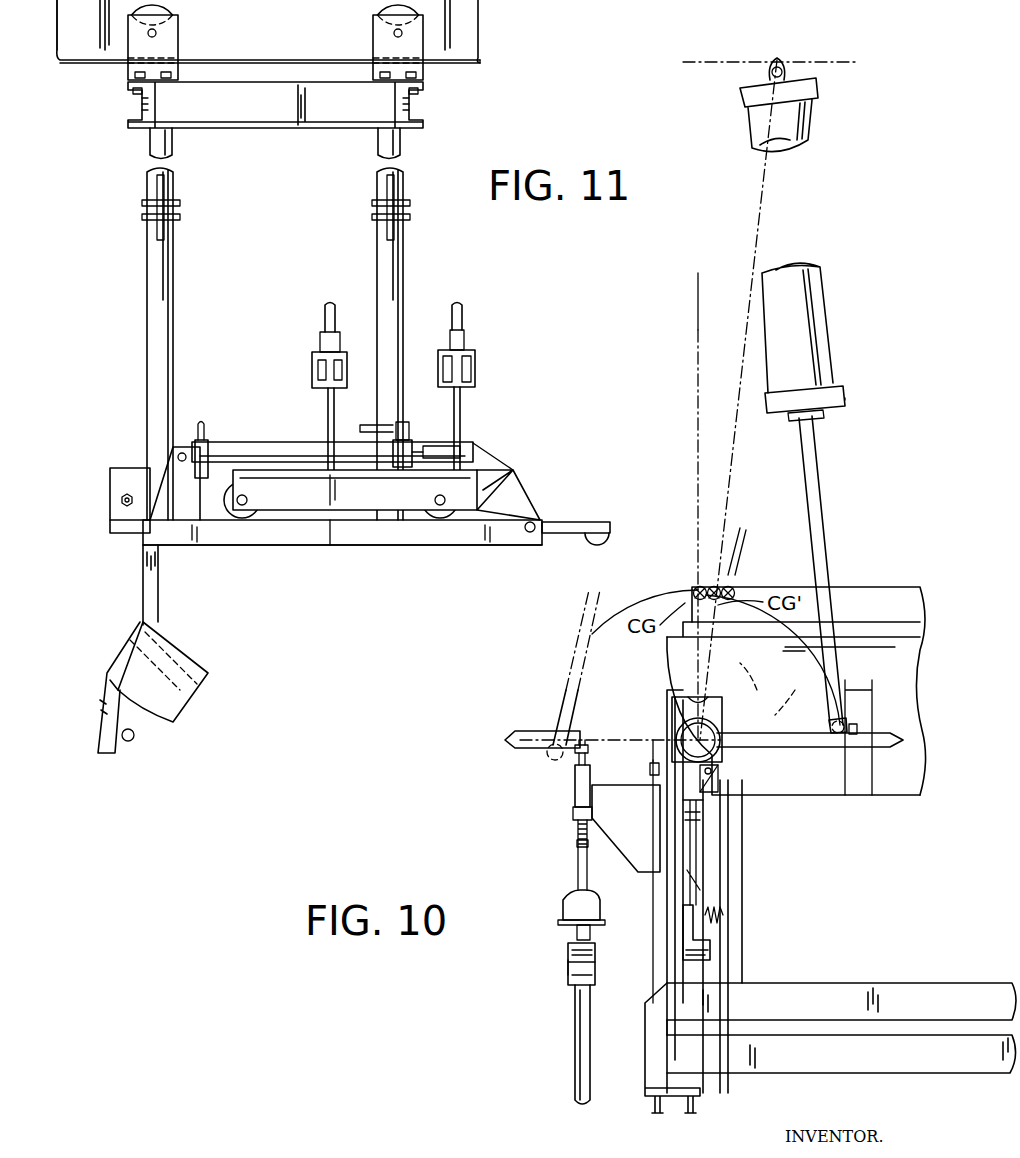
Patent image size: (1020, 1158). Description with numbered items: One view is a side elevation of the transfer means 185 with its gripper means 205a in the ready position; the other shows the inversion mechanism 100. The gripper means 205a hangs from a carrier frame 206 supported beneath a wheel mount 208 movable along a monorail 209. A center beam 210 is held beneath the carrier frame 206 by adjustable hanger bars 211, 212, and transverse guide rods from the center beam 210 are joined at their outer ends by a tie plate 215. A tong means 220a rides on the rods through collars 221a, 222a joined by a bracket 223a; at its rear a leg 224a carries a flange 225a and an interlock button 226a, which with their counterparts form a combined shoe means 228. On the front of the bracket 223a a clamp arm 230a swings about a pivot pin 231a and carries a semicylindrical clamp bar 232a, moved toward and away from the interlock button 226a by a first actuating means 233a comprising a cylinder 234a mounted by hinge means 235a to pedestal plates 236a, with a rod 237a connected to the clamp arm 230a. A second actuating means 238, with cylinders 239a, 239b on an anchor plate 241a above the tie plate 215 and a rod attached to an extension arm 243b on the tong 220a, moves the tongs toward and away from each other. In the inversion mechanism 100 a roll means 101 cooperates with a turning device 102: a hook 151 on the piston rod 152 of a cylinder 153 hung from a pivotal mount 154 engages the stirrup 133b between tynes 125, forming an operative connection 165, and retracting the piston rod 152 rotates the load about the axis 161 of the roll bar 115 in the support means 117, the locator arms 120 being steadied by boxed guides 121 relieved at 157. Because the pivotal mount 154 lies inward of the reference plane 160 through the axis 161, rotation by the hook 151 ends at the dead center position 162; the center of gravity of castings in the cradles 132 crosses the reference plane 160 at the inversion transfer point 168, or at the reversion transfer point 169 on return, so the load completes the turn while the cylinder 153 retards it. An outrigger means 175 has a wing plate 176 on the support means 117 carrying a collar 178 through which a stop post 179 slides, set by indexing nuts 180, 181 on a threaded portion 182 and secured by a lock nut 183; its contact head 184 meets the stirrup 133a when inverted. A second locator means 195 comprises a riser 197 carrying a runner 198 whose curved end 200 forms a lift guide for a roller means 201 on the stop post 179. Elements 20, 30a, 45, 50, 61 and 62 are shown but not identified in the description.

In FIG. 11, the monorail 209 is at (480, 2).
In FIG. 11, the transfer means 185 is at (503, 56).
In FIG. 11, the wheel mount 208 is at (362, 34).
In FIG. 11, the carrier frame 206 is at (376, 104).
In FIG. 11, the hanger bar 211 is at (172, 278).
In FIG. 11, the hanger bar 212 is at (393, 272).
In FIG. 11, the cylinder 239b is at (313, 355).
In FIG. 11, the extension arm 243b is at (327, 402).
In FIG. 11, the second actuating means 238 is at (479, 344).
In FIG. 11, the cylinder 239a is at (478, 355).
In FIG. 11, the anchor plate 241a is at (463, 397).
In FIG. 11, the first actuating means 233a is at (262, 442).
In FIG. 11, the extensible and retractable rod 237a is at (418, 448).
In FIG. 11, the hinge means 235a is at (178, 455).
In FIG. 11, the center beam 210 is at (112, 483).
In FIG. 11, the pedestal plates 236a is at (150, 507).
In FIG. 11, the gripper means 205a is at (486, 452).
In FIG. 11, the collar 221a is at (243, 518).
In FIG. 11, the collar 222a is at (438, 525).
In FIG. 11, the tie plate 215 is at (418, 502).
In FIG. 11, the cylinder 234a is at (260, 458).
In FIG. 11, the pivot pin 231a is at (534, 521).
In FIG. 11, the bracket 223a is at (298, 540).
In FIG. 11, the tong means 220a is at (366, 553).
In FIG. 11, the clamp arm 230a is at (573, 527).
In FIG. 11, the semicylindrical clamp bar 232a is at (595, 539).
In FIG. 11, the leg 224a is at (146, 585).
In FIG. 11, the combined shoe means 228 is at (210, 658).
In FIG. 11, the flange 225a is at (182, 697).
In FIG. 11, the interlock button 226a is at (133, 742).
In FIG. 10, the pivotal mount 154 is at (781, 66).
In FIG. 10, the relief 157 is at (722, 68).
In FIG. 10, the cylinder 153 is at (826, 358).
In FIG. 10, the turning device 102 is at (850, 428).
In FIG. 10, the piston rod 152 is at (818, 518).
In FIG. 10, the reference plane 160 is at (697, 418).
In FIG. 10, the dead center position 162 is at (727, 552).
In FIG. 10, the reversion transfer point 169 is at (695, 588).
In FIG. 10, the inversion transfer point 168 is at (719, 602).
In FIG. 10, the wall 20 is at (903, 585).
In FIG. 10, the ledge 30a is at (853, 620).
In FIG. 10, the cradle 132 is at (899, 778).
In FIG. 10, the tyne 125 is at (528, 735).
In FIG. 10, the stirrup 133a is at (582, 737).
In FIG. 10, the stirrup 133b is at (745, 664).
In FIG. 10, the operative connection 165 is at (849, 708).
In FIG. 10, the hook 151 is at (850, 725).
In FIG. 10, the support means 117 is at (650, 714).
In FIG. 10, the roll bar 115 is at (725, 766).
In FIG. 10, the axis 161 is at (701, 738).
In FIG. 10, the roll means 101 is at (760, 779).
In FIG. 10, the locator arm 120 is at (696, 878).
In FIG. 10, the boxed guide 121 is at (695, 958).
In FIG. 10, the rail 61 is at (846, 980).
In FIG. 10, the lower rail 50 is at (883, 1074).
In FIG. 10, the base frame 45 is at (845, 1072).
In FIG. 10, the plate 62 is at (655, 1073).
In FIG. 10, the wing plate 176 is at (652, 821).
In FIG. 10, the contact head 184 is at (590, 750).
In FIG. 10, the indexing nut 180 is at (576, 770).
In FIG. 10, the collar 178 is at (576, 782).
In FIG. 10, the indexing nut 181 is at (574, 812).
In FIG. 10, the lock nut 183 is at (577, 820).
In FIG. 10, the outrigger means 175 is at (570, 839).
In FIG. 10, the threaded portion 182 is at (577, 844).
In FIG. 10, the stop post 179 is at (577, 888).
In FIG. 10, the roller means 201 is at (578, 930).
In FIG. 10, the runner 198 is at (570, 941).
In FIG. 10, the second locator means 195 is at (560, 968).
In FIG. 10, the second end 200 is at (590, 963).
In FIG. 10, the riser 197 is at (578, 1010).
In FIG. 10, the inversion mechanism 100 is at (490, 675).